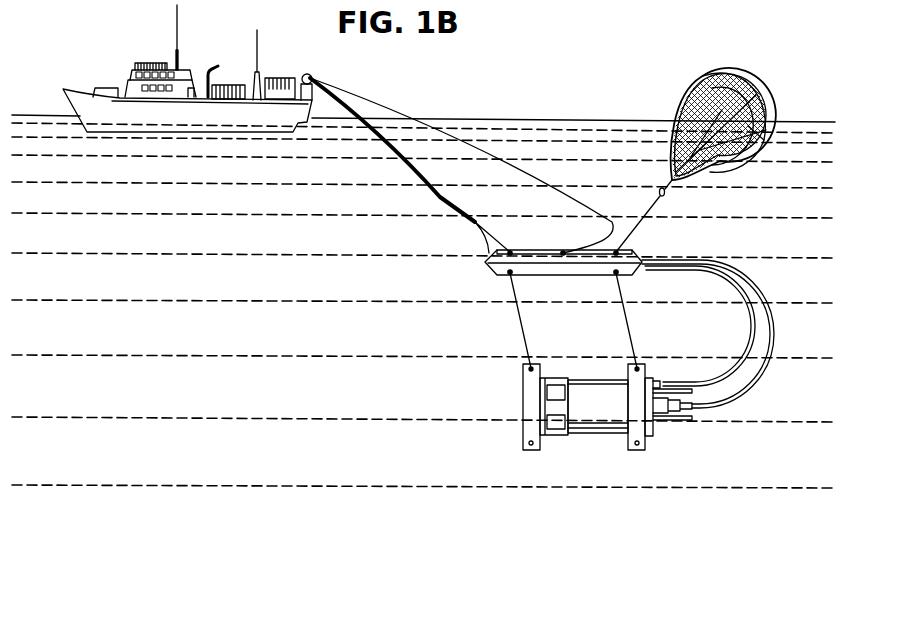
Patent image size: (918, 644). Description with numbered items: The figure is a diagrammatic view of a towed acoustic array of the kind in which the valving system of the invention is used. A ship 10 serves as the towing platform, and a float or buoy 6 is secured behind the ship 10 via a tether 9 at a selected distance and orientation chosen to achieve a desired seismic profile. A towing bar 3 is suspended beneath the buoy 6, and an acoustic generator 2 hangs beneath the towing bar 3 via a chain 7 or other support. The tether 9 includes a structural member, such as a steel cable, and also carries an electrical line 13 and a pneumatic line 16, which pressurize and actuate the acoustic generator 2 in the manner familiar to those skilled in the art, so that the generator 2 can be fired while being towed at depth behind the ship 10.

The ship 10 is at (81, 100).
The tether 9 is at (438, 192).
The float or buoy 6 is at (682, 96).
The towing bar 3 is at (493, 266).
The chain 7 is at (518, 318).
The pneumatic line 16 is at (702, 378).
The electrical line 13 is at (747, 392).
The acoustic generator 2 is at (597, 428).